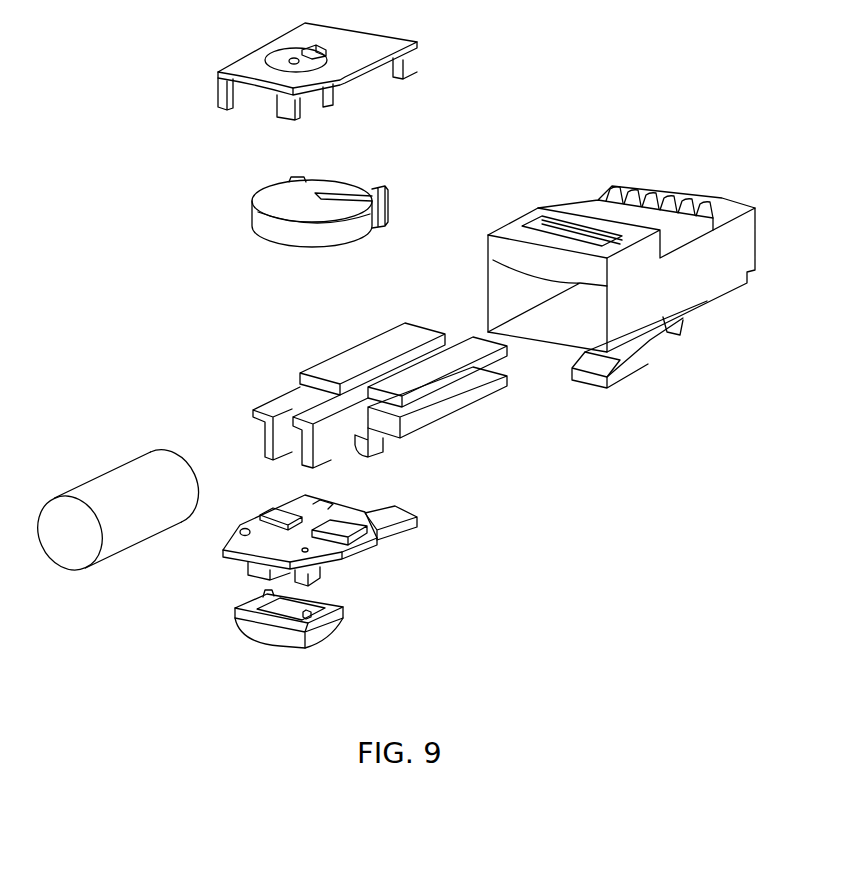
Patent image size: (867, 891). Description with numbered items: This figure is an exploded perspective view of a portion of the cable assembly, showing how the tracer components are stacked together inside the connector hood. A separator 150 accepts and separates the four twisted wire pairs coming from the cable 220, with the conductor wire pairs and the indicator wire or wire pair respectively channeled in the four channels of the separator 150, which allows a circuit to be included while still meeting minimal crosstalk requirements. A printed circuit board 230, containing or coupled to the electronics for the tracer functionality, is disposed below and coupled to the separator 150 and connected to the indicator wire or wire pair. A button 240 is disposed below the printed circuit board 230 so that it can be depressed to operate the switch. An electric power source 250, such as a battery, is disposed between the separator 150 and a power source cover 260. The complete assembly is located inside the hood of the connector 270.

The separator 150 is at (453, 405).
The cable 220 is at (118, 473).
The printed circuit board 230 is at (393, 533).
The button 240 is at (338, 627).
The electric power source 250 is at (250, 222).
The power source cover 260 is at (248, 60).
The connector 270 is at (707, 295).